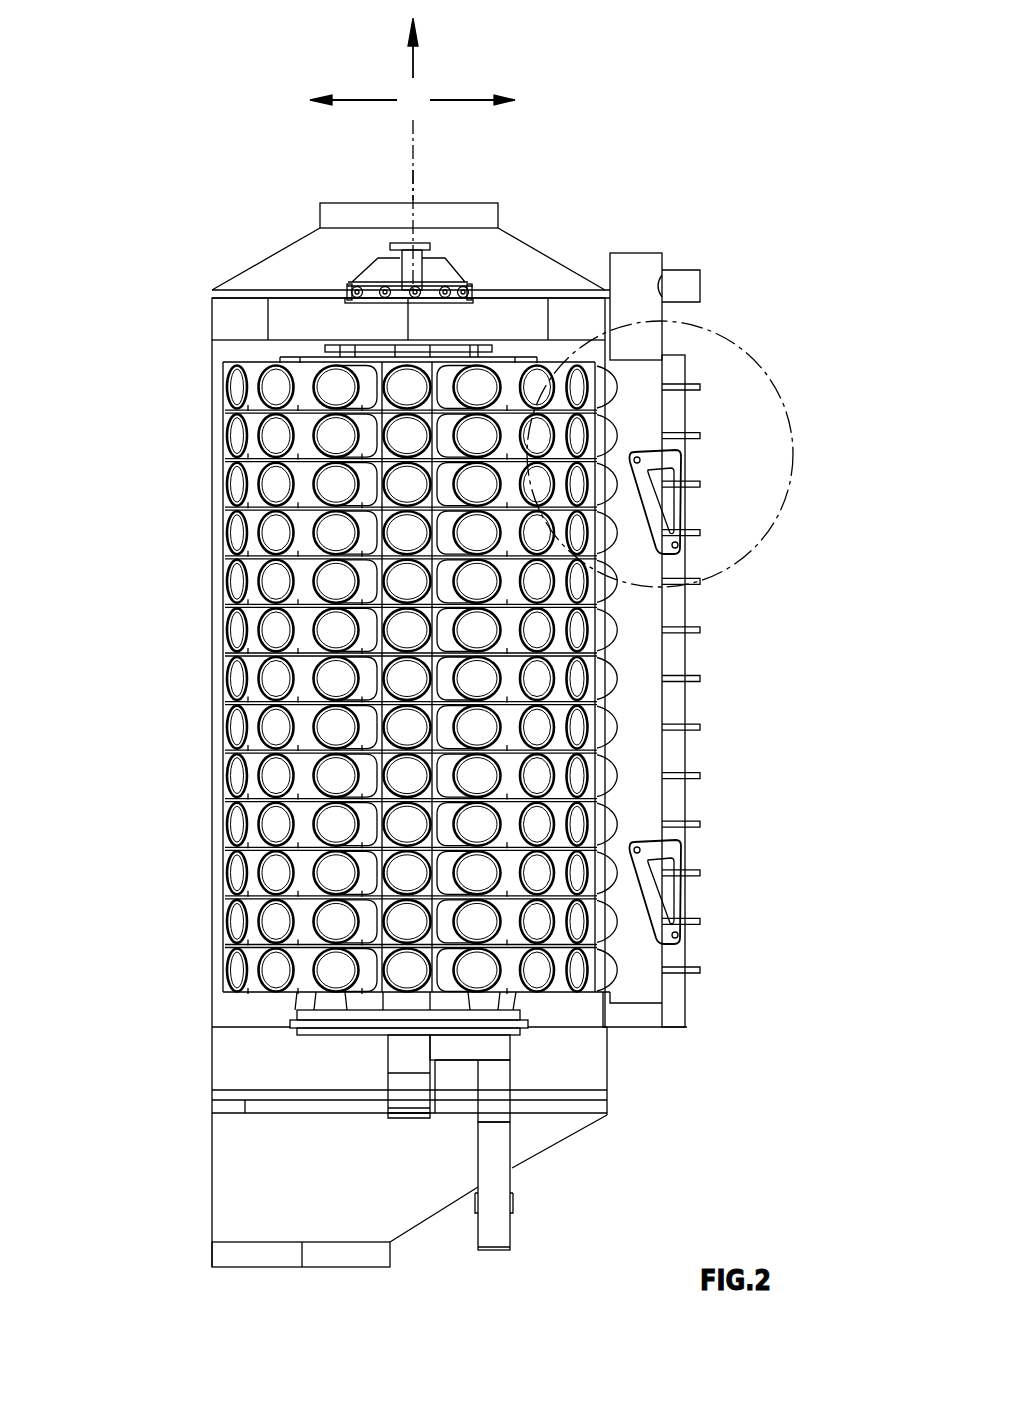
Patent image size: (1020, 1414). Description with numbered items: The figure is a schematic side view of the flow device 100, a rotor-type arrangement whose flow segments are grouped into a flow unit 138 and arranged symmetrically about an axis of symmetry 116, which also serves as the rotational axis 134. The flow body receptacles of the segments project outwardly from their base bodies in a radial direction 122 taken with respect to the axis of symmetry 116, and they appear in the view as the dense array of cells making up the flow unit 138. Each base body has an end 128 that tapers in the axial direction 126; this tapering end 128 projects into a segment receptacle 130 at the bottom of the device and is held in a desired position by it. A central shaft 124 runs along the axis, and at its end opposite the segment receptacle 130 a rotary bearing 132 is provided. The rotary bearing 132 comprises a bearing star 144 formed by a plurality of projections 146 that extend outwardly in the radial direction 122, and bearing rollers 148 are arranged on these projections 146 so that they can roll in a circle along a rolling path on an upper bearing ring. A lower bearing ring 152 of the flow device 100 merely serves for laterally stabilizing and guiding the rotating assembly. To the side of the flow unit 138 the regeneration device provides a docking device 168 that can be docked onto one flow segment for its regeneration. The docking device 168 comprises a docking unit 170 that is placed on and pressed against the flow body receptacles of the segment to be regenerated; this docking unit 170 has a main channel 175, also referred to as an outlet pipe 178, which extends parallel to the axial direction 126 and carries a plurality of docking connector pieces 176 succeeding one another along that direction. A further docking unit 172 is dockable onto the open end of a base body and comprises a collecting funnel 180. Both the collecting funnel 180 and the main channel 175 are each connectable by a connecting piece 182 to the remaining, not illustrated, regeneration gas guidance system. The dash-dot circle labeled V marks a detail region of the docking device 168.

The flow device 100 is at (270, 130).
The axis of symmetry 116 is at (415, 167).
The radial direction 122 is at (463, 97).
The central shaft 124 is at (363, 1002).
The axial direction 126 is at (415, 57).
The end 128 is at (313, 1015).
The segment receptacle 130 is at (400, 1058).
The rotary bearing 132 is at (417, 282).
The rotational axis 134 is at (415, 186).
The flow unit 138 is at (183, 776).
The bearing star 144 is at (392, 272).
The projections 146 is at (377, 281).
The bearing rollers 148 is at (478, 293).
The lower bearing ring 152 is at (539, 1050).
The docking device 168 is at (672, 1004).
The docking unit 170 is at (648, 712).
The further docking unit 172 is at (467, 1047).
The main channel 175 is at (653, 610).
The docking connector pieces 176 is at (612, 928).
The outlet pipe 178 is at (643, 772).
The collecting funnel 180 is at (482, 1082).
The connecting piece 182 is at (692, 290).
The detail view V is at (792, 437).